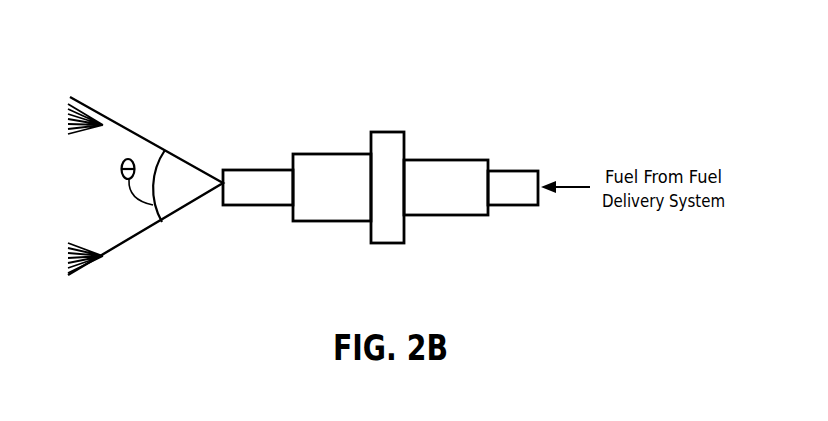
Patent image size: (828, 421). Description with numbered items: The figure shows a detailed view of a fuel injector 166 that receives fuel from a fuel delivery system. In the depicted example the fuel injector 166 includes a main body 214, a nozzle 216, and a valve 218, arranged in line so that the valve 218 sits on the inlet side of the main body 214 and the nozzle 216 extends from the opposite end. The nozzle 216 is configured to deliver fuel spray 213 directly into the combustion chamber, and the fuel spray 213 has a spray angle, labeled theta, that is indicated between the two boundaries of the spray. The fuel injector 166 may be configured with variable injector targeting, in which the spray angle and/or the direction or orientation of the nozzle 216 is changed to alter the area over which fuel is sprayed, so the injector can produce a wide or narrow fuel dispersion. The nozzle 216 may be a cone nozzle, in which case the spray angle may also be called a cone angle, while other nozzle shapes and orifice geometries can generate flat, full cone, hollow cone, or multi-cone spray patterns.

The fuel injector 166 is at (246, 62).
The fuel spray 213 is at (103, 257).
The main body 214 is at (353, 153).
The nozzle 216 is at (265, 169).
The valve 218 is at (387, 131).